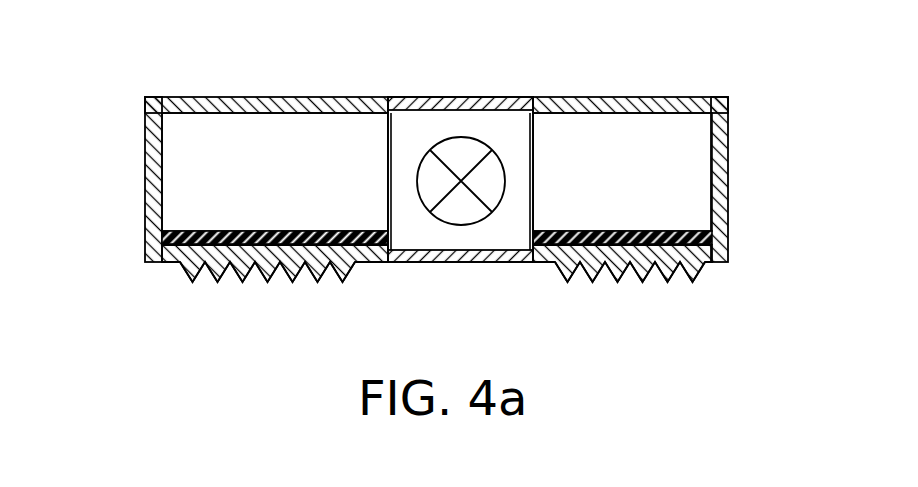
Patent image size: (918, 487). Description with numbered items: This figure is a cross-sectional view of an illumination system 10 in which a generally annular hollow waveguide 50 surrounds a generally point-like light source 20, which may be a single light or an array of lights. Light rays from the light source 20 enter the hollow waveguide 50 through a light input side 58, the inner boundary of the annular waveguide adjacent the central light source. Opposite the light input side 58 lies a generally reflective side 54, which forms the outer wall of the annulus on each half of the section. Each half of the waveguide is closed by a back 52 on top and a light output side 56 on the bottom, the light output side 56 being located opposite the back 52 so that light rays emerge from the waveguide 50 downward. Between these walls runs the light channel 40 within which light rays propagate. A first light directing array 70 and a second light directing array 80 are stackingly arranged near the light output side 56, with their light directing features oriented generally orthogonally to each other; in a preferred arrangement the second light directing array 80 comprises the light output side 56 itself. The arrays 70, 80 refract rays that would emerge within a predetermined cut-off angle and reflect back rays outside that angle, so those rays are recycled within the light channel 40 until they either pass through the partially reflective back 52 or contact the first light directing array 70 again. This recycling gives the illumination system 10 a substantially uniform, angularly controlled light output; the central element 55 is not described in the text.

The illumination system 10 is at (70, 72).
The light source 20 is at (462, 152).
The light channel 40 is at (277, 187).
The hollow waveguide 50 is at (703, 72).
The back 52 is at (252, 97).
The reflective side 54 is at (145, 177).
The central support block 55 is at (492, 98).
The light output side 56 is at (267, 275).
The light input side 58 is at (388, 178).
The first light directing array 70 is at (295, 237).
The second light directing array 80 is at (192, 267).